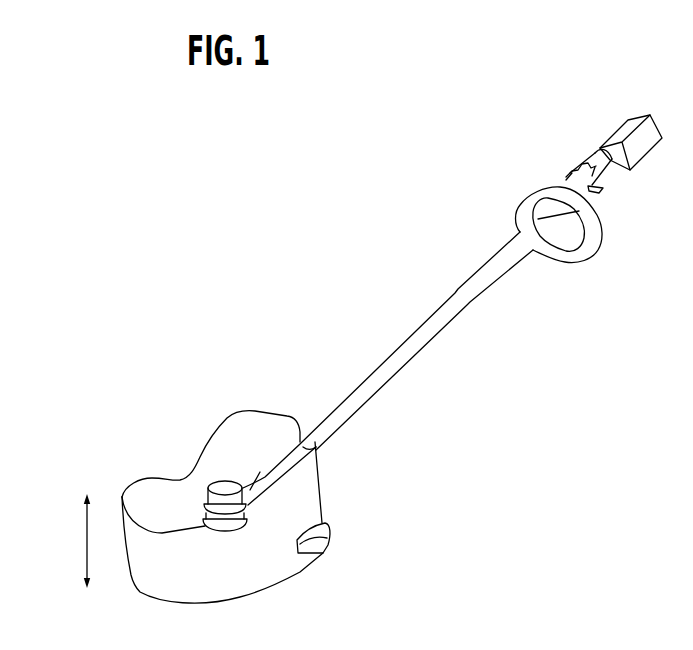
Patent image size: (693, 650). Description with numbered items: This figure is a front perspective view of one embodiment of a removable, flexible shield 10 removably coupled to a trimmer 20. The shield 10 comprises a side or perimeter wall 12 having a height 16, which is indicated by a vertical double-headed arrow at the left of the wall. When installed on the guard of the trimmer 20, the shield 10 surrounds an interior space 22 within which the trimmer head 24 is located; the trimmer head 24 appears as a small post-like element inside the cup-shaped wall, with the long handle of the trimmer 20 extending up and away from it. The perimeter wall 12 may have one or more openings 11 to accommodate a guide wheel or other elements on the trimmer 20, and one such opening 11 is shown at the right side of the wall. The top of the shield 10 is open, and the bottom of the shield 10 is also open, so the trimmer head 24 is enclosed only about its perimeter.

The shield 10 is at (105, 459).
The opening 11 is at (328, 507).
The perimeter wall 12 is at (265, 565).
The height 16 is at (87, 540).
The trimmer 20 is at (506, 304).
The interior space 22 is at (173, 484).
The trimmer head 24 is at (235, 482).